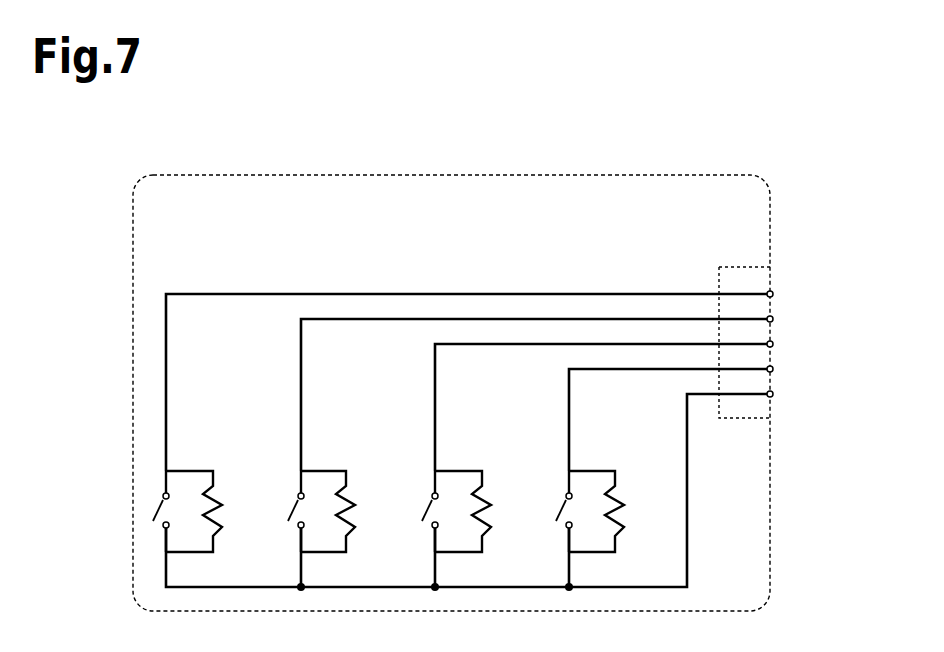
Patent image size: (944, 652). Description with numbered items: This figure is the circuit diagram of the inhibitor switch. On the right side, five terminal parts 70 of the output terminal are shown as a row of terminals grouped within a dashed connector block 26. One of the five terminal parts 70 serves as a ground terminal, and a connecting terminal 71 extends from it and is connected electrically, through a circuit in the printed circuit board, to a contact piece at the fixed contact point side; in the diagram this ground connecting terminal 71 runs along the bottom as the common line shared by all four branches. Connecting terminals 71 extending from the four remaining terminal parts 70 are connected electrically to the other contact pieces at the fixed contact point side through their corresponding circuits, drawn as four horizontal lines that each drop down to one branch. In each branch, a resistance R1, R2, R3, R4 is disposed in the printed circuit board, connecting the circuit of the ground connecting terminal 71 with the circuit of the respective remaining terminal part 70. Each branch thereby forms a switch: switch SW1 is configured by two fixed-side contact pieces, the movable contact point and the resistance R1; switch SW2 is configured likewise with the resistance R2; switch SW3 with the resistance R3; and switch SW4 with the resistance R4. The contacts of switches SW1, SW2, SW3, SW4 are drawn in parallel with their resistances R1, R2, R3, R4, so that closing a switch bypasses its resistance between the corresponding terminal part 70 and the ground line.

The connector 26 is at (772, 262).
The terminal part 70 is at (740, 267).
The connecting terminal 71 is at (663, 293).
The switch SW1 is at (189, 489).
The switch SW2 is at (324, 489).
The switch SW3 is at (458, 489).
The switch SW4 is at (592, 489).
The resistance R1 is at (216, 529).
The resistance R2 is at (349, 529).
The resistance R3 is at (485, 529).
The resistance R4 is at (619, 529).